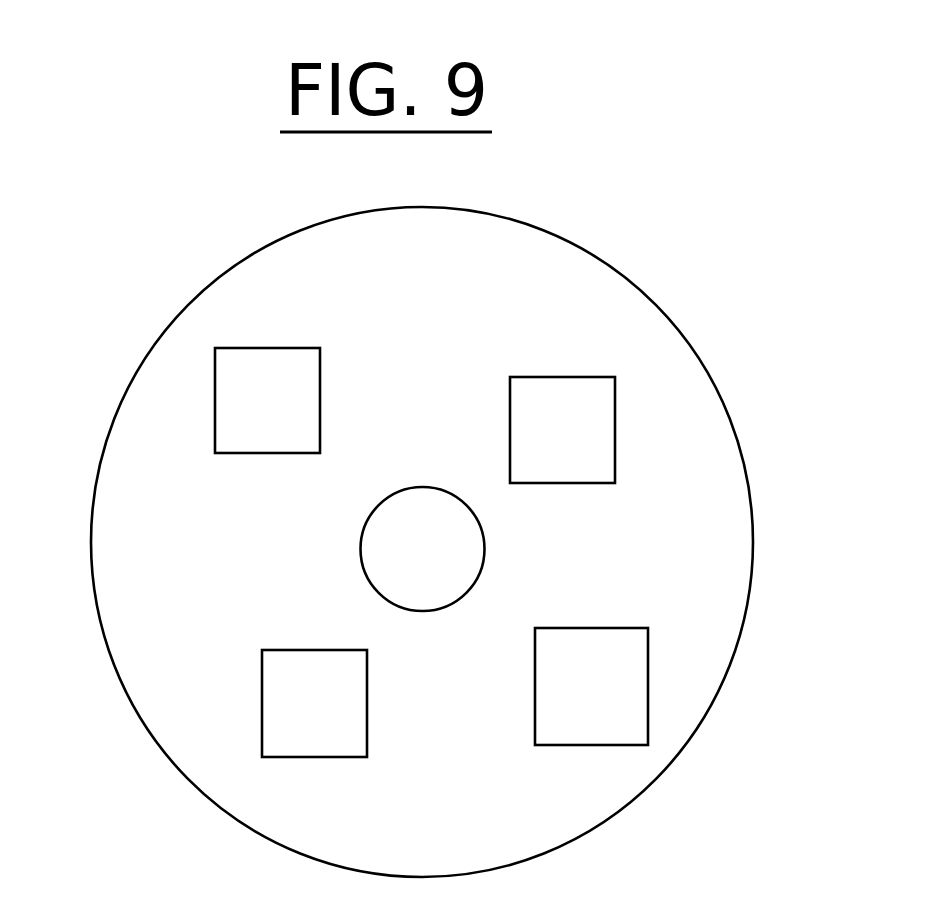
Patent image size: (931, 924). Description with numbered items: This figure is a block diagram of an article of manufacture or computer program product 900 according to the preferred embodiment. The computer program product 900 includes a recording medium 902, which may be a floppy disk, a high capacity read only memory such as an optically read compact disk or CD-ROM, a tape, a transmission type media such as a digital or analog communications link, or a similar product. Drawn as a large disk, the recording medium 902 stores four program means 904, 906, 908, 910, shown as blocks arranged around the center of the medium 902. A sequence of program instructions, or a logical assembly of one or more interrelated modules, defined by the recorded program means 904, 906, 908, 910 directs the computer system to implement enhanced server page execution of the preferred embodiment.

The computer program product 900 is at (703, 327).
The recording medium 902 is at (153, 355).
The program means 904 is at (562, 430).
The program means 906 is at (591, 686).
The program means 908 is at (314, 703).
The program means 910 is at (267, 400).